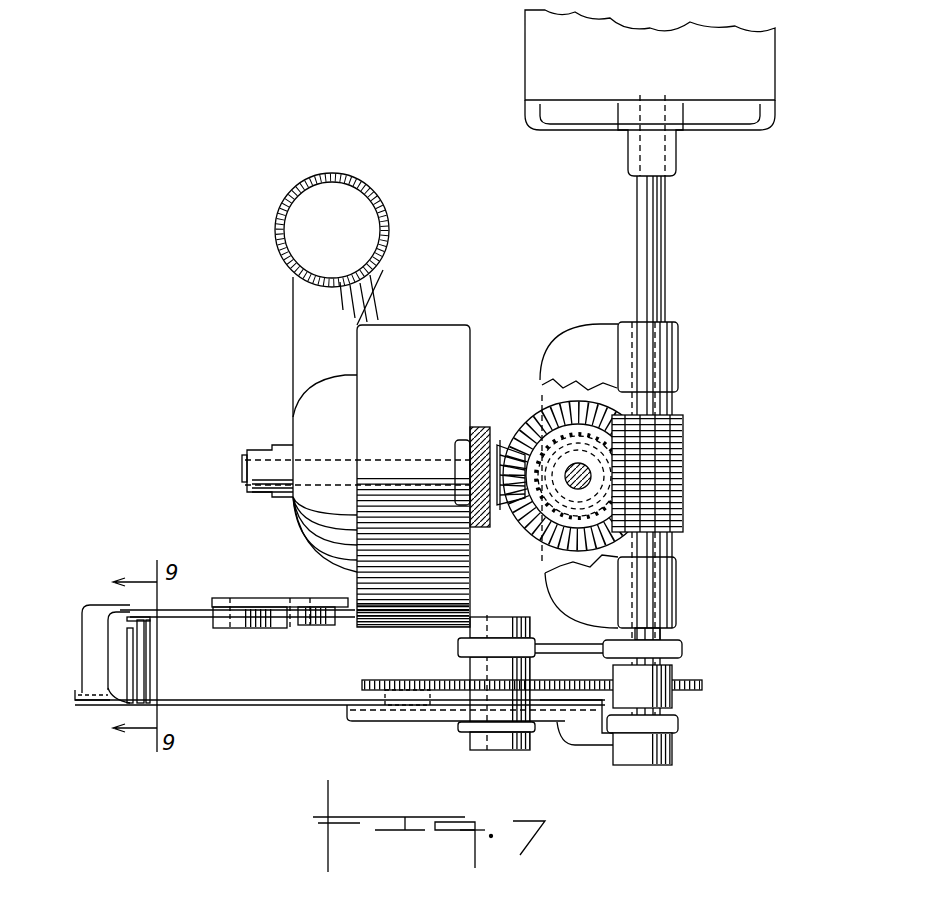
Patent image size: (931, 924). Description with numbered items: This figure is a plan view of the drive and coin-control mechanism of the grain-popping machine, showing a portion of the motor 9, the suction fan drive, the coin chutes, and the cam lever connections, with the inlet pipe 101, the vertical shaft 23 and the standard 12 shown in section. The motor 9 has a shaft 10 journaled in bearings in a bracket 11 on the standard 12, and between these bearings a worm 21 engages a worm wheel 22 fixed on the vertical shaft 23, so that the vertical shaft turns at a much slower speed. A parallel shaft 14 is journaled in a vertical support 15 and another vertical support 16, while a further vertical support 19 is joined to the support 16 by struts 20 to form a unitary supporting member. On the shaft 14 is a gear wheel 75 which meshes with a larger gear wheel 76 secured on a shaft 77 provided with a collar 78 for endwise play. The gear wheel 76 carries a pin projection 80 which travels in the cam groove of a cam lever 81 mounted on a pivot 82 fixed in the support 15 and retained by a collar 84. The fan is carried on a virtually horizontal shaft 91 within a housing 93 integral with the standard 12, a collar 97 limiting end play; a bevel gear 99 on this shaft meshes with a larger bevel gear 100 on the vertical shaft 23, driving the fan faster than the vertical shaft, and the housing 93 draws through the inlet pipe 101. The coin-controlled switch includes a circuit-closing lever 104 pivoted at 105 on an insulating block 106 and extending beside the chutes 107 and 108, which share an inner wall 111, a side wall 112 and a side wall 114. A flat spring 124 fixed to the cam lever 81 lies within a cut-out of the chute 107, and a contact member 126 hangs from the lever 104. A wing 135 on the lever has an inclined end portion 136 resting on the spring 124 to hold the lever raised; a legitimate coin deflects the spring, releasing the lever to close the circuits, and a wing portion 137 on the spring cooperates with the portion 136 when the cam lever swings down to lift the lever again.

The motor 9 is at (556, 128).
The shaft 10 is at (640, 248).
The bracket 11 is at (609, 475).
The standard 12 is at (485, 428).
The shaft 14 is at (660, 637).
The vertical support 15 is at (680, 723).
The vertical support 16 is at (682, 650).
The vertical support 19 is at (458, 645).
The struts 20 is at (572, 640).
The worm 21 is at (683, 480).
The worm wheel 22 is at (600, 453).
The vertical shaft 23 is at (565, 465).
The gear wheel 75 is at (675, 686).
The gear wheel 76 is at (380, 680).
The shaft 77 is at (489, 617).
The collar 78 is at (478, 745).
The pin projection 80 is at (370, 722).
The cam lever 81 is at (385, 723).
The pivot 82 is at (648, 765).
The collar 84 is at (620, 752).
The shaft 91 is at (247, 470).
The housing 93 is at (413, 476).
The collar 97 is at (262, 500).
The bevel gear 99 is at (498, 506).
The bevel gear 100 is at (542, 527).
The inlet pipe 101 is at (292, 278).
The circuit-closing lever 104 is at (185, 605).
The pivot 105 is at (318, 625).
The block 106 is at (270, 606).
The chute 107 is at (122, 618).
The chute 108 is at (140, 615).
The inner wall 111 is at (140, 650).
The side wall 112 is at (150, 670).
The side wall 114 is at (127, 660).
The flat spring 124 is at (340, 714).
The contact member 126 is at (232, 628).
The wing 135 is at (92, 630).
The inclined end portion 136 is at (92, 688).
The wing portion 137 is at (100, 704).